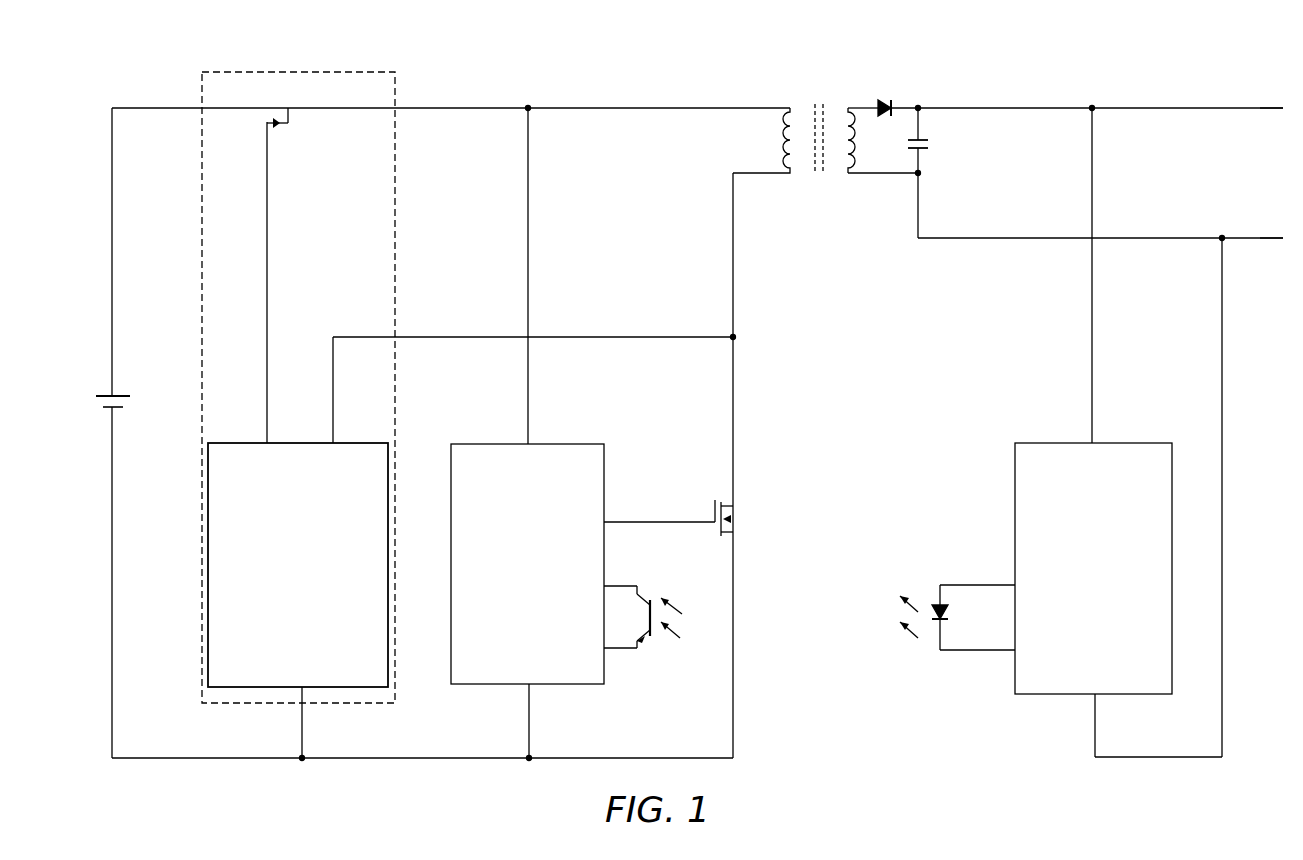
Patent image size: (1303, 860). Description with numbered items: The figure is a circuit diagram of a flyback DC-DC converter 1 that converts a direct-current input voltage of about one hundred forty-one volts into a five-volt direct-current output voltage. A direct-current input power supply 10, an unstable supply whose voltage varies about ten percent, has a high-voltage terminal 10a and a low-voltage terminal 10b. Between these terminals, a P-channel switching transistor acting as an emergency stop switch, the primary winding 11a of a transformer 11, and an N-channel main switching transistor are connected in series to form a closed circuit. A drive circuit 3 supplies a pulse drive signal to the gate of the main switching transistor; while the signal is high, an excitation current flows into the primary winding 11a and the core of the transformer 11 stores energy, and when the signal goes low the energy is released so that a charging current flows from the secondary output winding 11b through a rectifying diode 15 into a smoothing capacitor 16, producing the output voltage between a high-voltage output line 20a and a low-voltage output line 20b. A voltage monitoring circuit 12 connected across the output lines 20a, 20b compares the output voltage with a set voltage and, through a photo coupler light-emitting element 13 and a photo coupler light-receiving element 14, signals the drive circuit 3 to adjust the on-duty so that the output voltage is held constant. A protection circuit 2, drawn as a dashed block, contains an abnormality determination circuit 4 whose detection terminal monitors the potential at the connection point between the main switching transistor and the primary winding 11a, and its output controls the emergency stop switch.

The DC-DC converter 1 is at (609, 78).
The protection circuit 2 is at (397, 88).
The drive circuit 3 is at (516, 641).
The abnormality determination circuit 4 is at (291, 649).
The direct-current input power supply 10 is at (52, 365).
The high-voltage terminal 10a is at (94, 382).
The low-voltage terminal 10b is at (90, 420).
The transformer 11 is at (862, 32).
The primary winding 11a is at (792, 100).
The secondary output winding 11b is at (846, 100).
The voltage monitoring circuit 12 is at (1080, 645).
The photo coupler light-emitting element 13 is at (957, 630).
The photo coupler light-receiving element 14 is at (643, 629).
The rectifying diode 15 is at (885, 95).
The smoothing capacitor 16 is at (929, 144).
The high-voltage output line 20a is at (1200, 108).
The low-voltage output line 20b is at (1248, 240).